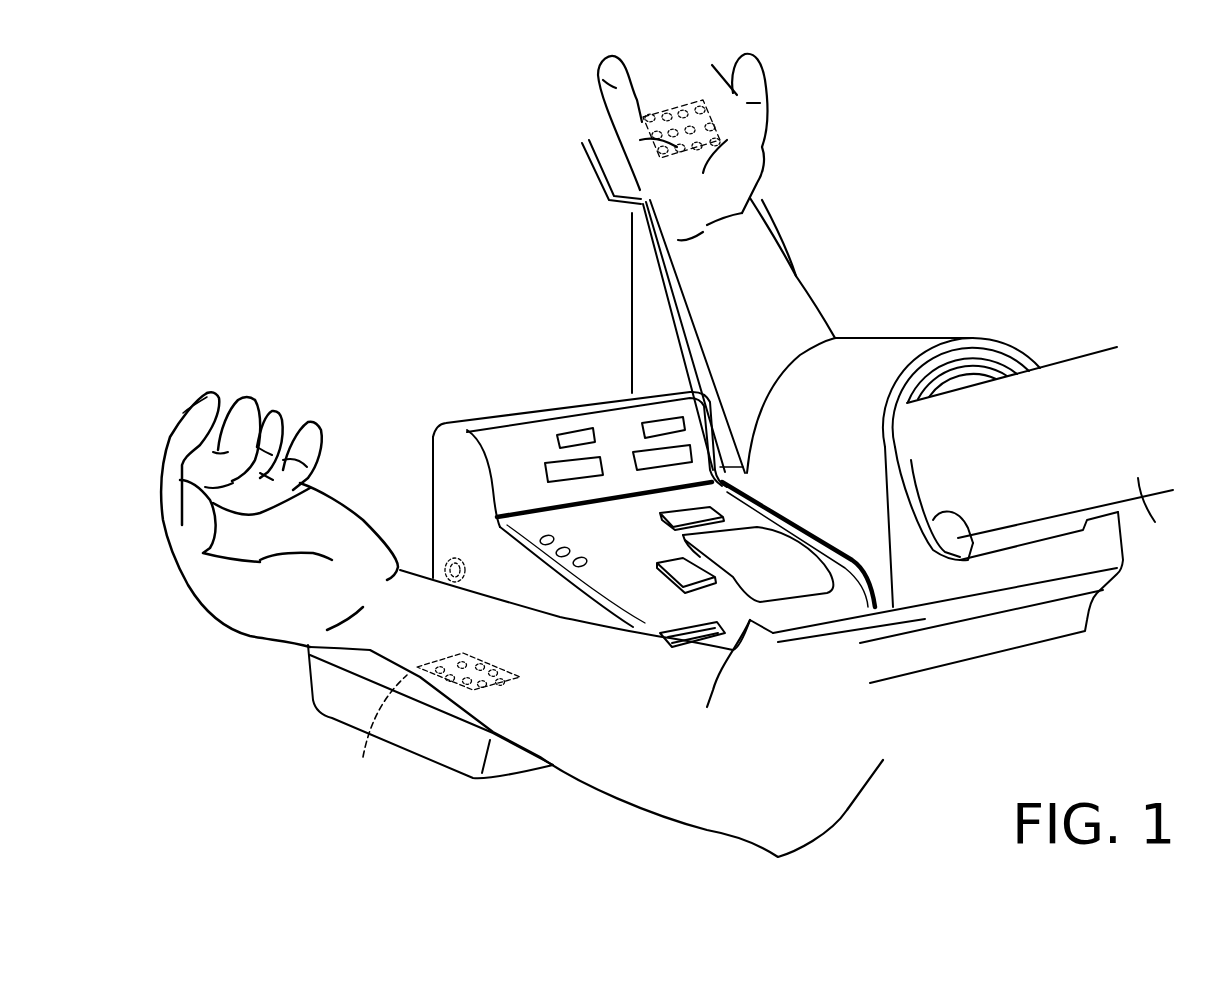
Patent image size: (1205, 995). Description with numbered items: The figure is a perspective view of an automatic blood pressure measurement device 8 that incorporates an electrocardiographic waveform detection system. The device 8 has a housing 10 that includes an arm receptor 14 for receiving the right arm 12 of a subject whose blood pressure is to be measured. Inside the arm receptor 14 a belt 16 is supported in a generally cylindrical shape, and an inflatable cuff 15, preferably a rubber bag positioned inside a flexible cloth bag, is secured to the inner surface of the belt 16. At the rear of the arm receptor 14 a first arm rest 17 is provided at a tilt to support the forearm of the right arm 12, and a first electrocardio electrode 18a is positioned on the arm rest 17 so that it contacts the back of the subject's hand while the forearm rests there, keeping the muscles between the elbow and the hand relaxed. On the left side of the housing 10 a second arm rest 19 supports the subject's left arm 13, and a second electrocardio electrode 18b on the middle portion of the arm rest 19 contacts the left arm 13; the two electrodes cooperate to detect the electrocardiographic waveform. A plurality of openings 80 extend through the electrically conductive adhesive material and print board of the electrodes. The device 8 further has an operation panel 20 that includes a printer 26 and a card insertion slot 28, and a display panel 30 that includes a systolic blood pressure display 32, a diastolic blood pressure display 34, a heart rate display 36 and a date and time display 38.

The automatic blood pressure measurement device 8 is at (414, 316).
The housing 10 is at (1103, 553).
The right arm 12 is at (1140, 480).
The left arm 13 is at (840, 790).
The arm receptor 14 is at (970, 533).
The inflatable cuff 15 is at (970, 372).
The belt 16 is at (1007, 367).
The first arm rest 17 is at (760, 230).
The first electrocardio electrode 18a is at (720, 150).
The second electrocardio electrode 18b is at (437, 721).
The second arm rest 19 is at (363, 660).
The operation panel 20 is at (533, 528).
The printer 26 is at (832, 594).
The card insertion slot 28 is at (727, 637).
The display panel 30 is at (512, 468).
The systolic blood pressure display 32 is at (555, 470).
The diastolic blood pressure display 34 is at (648, 455).
The heart rate display 36 is at (671, 412).
The date and time display 38 is at (583, 437).
The openings 80 is at (723, 118).